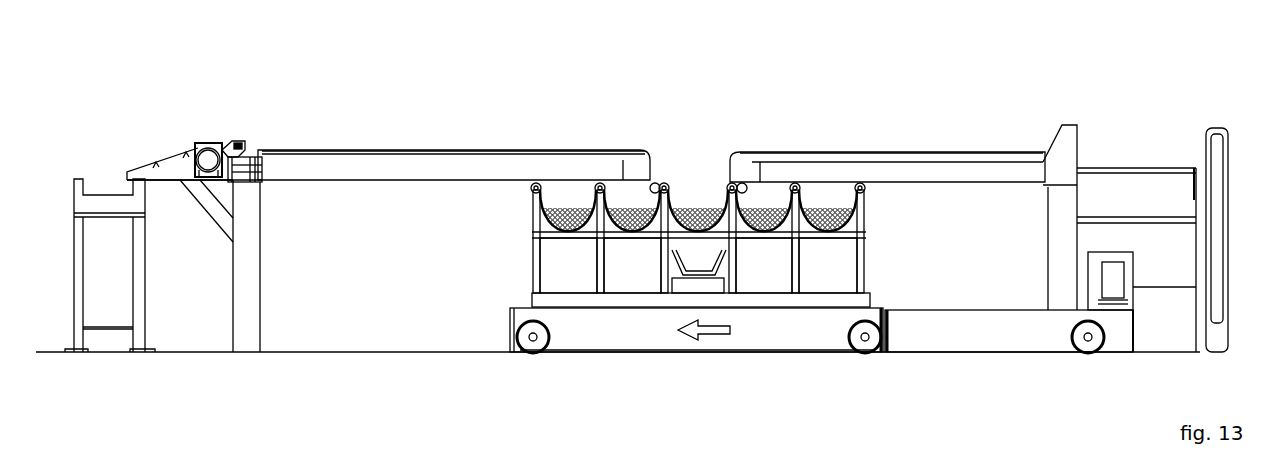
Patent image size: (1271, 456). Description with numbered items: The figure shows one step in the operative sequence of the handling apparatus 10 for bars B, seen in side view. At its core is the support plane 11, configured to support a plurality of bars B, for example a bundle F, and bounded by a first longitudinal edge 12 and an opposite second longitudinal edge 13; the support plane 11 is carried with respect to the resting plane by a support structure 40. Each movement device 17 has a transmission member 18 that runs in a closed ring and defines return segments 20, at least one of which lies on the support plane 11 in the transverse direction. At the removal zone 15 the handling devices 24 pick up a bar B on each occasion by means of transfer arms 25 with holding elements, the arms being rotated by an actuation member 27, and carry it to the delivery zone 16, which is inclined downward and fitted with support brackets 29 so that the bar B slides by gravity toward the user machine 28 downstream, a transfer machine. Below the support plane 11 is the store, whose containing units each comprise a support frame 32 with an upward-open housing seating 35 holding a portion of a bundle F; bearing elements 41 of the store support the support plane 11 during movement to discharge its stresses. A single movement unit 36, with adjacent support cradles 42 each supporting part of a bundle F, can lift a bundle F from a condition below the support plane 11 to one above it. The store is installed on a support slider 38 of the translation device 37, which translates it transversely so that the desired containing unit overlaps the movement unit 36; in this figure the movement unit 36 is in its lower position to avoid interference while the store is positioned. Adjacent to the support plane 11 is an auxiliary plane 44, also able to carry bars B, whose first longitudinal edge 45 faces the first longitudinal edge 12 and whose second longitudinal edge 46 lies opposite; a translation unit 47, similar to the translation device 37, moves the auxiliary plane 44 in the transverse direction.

The handling apparatus 10 is at (172, 47).
The support plane 11 is at (435, 104).
The first longitudinal edge 12 is at (635, 134).
The second longitudinal edge 13 is at (268, 144).
The removal zone 15 is at (220, 112).
The delivery zone 16 is at (178, 155).
The movement device 17 is at (490, 149).
The transmission member 18 is at (525, 149).
The return segment 20 is at (383, 150).
The handling device 24 is at (208, 140).
The transfer arm 25 is at (238, 142).
The actuation member 27 is at (243, 182).
The user machine 28 is at (106, 181).
The support bracket 29 is at (151, 172).
The support frame 32 is at (575, 235).
The housing seating 35 is at (541, 216).
The movement unit 36 is at (700, 295).
The translation device 37 is at (603, 329).
The support slider 38 is at (757, 328).
The support structure 40 is at (243, 283).
The bearing element 41 is at (536, 268).
The support cradle 42 is at (712, 255).
The auxiliary plane 44 is at (855, 110).
The first longitudinal edge 45 is at (752, 139).
The second longitudinal edge 46 is at (1045, 139).
The translation unit 47 is at (963, 331).
The bar B is at (568, 210).
The bundle F is at (579, 206).